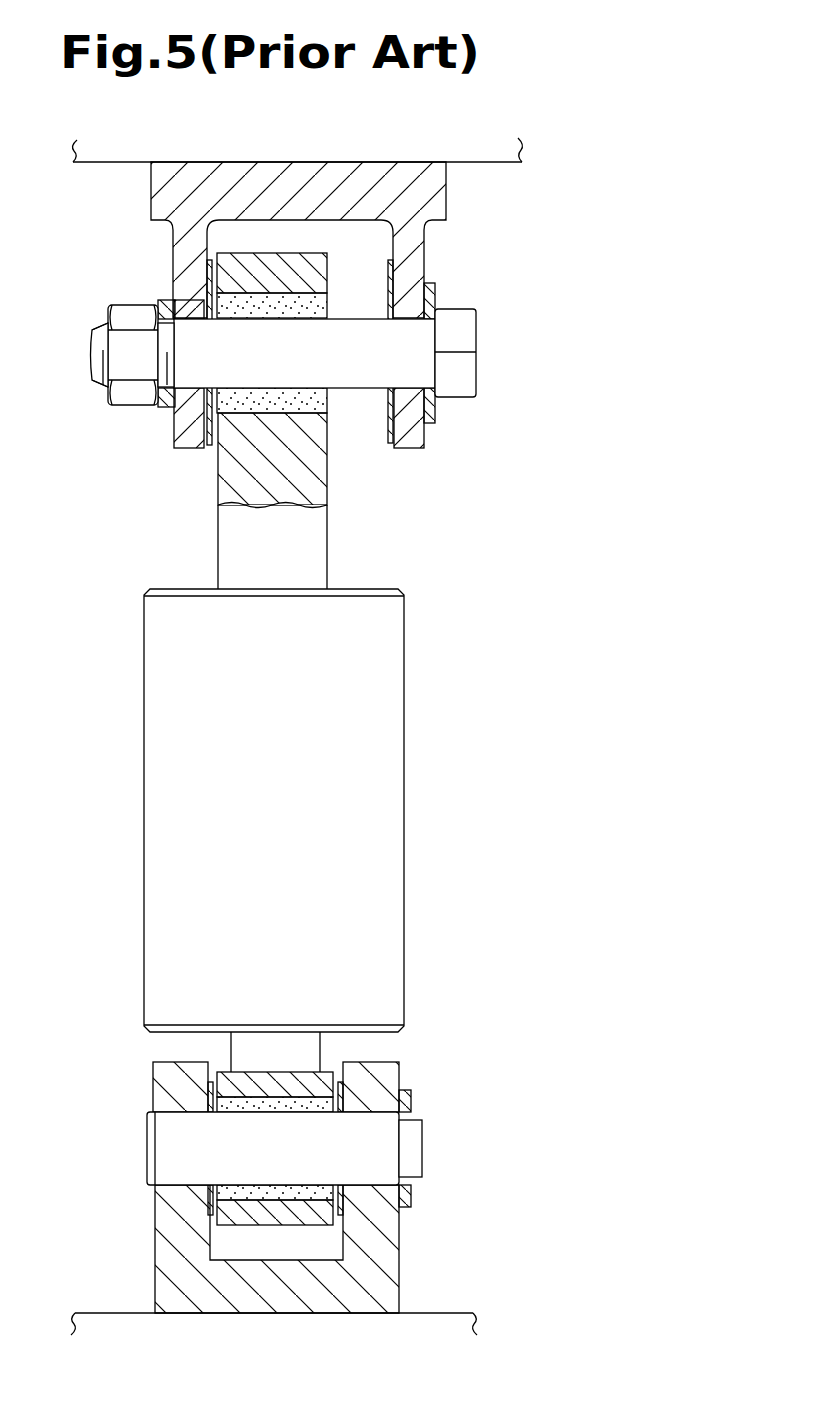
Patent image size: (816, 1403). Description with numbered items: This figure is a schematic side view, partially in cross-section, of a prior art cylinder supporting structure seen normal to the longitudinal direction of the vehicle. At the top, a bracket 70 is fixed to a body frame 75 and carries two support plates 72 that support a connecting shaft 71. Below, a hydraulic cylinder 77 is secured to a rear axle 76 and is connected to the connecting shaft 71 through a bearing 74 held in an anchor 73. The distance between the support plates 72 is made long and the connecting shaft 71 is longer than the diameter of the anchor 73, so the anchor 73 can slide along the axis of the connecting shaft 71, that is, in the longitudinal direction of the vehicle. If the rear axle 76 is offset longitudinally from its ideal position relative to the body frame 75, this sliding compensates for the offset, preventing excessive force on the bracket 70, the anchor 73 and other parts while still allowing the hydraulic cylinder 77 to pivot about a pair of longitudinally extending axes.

The bracket 70 is at (446, 188).
The connecting shaft 71 is at (365, 388).
The support plates 72 is at (174, 434).
The anchor 73 is at (327, 497).
The bearing 74 is at (282, 388).
The body frame 75 is at (98, 163).
The rear axle 76 is at (470, 1313).
The hydraulic cylinder 77 is at (404, 752).